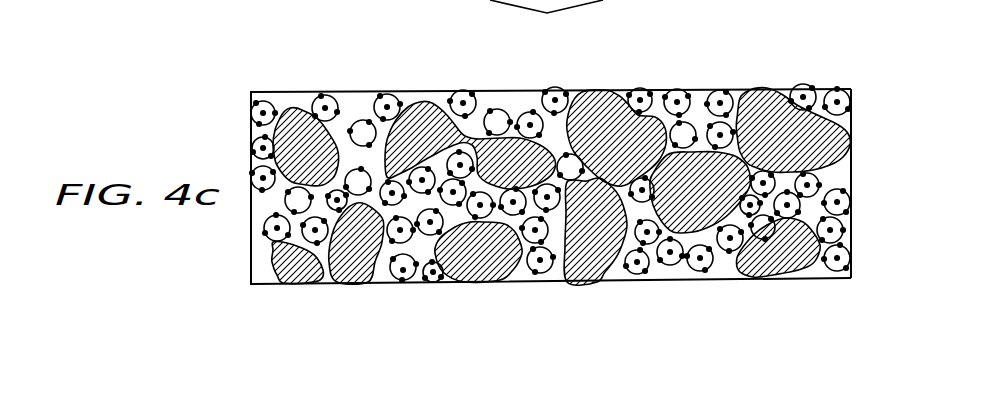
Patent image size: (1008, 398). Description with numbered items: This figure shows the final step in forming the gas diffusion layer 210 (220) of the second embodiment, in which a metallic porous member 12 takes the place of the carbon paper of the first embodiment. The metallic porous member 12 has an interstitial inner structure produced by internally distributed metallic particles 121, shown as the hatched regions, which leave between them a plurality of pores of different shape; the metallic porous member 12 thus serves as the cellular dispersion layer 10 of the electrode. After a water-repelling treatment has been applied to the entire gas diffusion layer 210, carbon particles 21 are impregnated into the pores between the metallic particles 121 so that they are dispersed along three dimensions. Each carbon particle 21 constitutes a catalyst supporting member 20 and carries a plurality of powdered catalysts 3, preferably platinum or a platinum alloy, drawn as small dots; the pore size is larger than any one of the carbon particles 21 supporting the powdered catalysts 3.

The powdered catalyst 3 is at (403, 274).
The cellular dispersion layer 10 is at (805, 89).
The metallic porous member 12 is at (852, 209).
The catalyst supporting member 20 is at (396, 276).
The carbon particle 21 is at (412, 279).
The metallic particle 121 is at (292, 116).
The gas diffusion layer 210 is at (733, 78).
The gas diffusion layer 220 is at (551, 142).